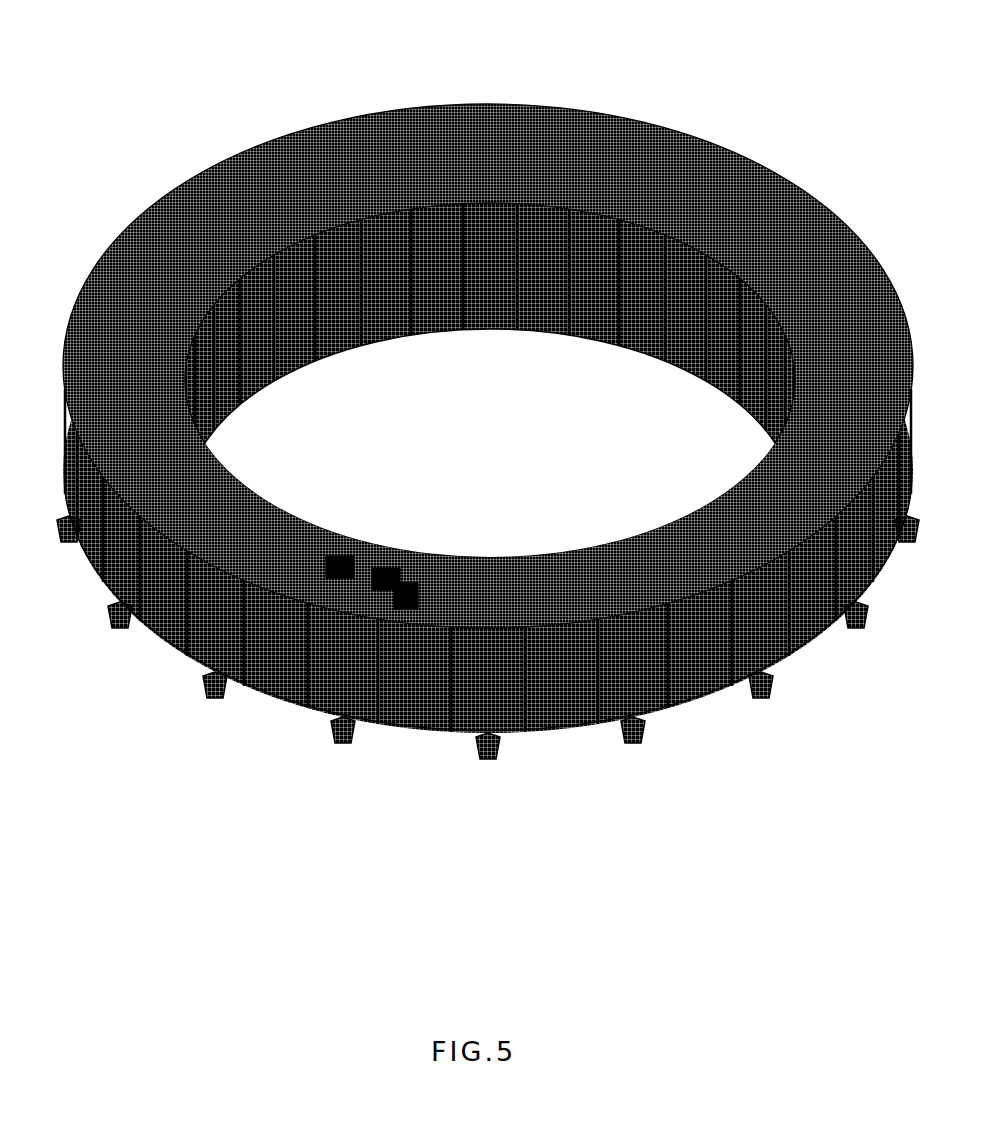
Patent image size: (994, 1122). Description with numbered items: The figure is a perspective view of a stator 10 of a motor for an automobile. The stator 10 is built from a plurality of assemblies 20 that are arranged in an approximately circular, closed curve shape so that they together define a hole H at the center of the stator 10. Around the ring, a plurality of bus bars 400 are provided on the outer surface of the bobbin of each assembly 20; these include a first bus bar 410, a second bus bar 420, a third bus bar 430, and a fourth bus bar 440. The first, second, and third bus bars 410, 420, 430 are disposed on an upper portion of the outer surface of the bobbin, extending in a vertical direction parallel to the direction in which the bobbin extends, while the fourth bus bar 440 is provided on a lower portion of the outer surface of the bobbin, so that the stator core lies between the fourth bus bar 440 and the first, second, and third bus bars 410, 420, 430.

The stator 10 is at (306, 41).
The assembly 20 is at (537, 345).
The hole H is at (410, 438).
The bus bars 400 is at (812, 807).
The first bus bar 410 is at (332, 557).
The second bus bar 420 is at (377, 572).
The third bus bar 430 is at (393, 590).
The fourth bus bar 440 is at (473, 752).